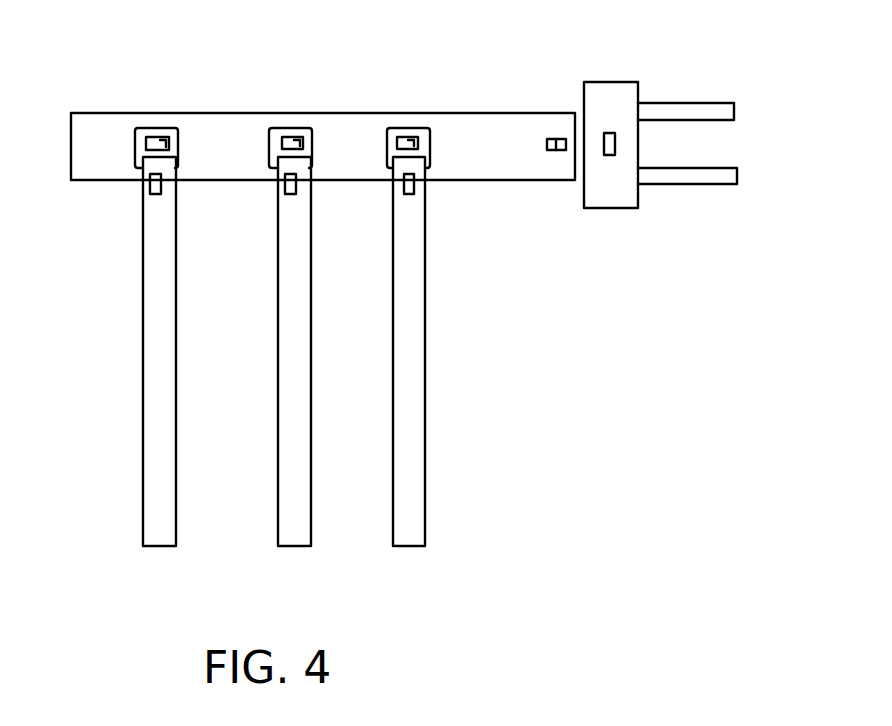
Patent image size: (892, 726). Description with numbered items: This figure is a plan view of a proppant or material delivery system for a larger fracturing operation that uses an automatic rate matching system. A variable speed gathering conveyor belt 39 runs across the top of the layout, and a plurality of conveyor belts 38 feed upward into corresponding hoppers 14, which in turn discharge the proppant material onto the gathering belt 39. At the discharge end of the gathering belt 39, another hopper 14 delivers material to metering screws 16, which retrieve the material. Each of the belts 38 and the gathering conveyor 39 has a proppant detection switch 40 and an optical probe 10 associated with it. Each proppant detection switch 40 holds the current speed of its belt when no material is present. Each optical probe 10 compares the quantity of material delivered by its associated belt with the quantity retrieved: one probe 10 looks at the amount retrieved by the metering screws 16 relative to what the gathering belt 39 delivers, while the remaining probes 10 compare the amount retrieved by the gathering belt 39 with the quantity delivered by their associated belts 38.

The optical probe 10 is at (165, 143).
The hopper 14 is at (167, 137).
The metering screws 16 is at (700, 108).
The conveyor belt 38 is at (153, 387).
The variable speed gathering conveyor belt 39 is at (93, 133).
The proppant detection switch 40 is at (156, 190).